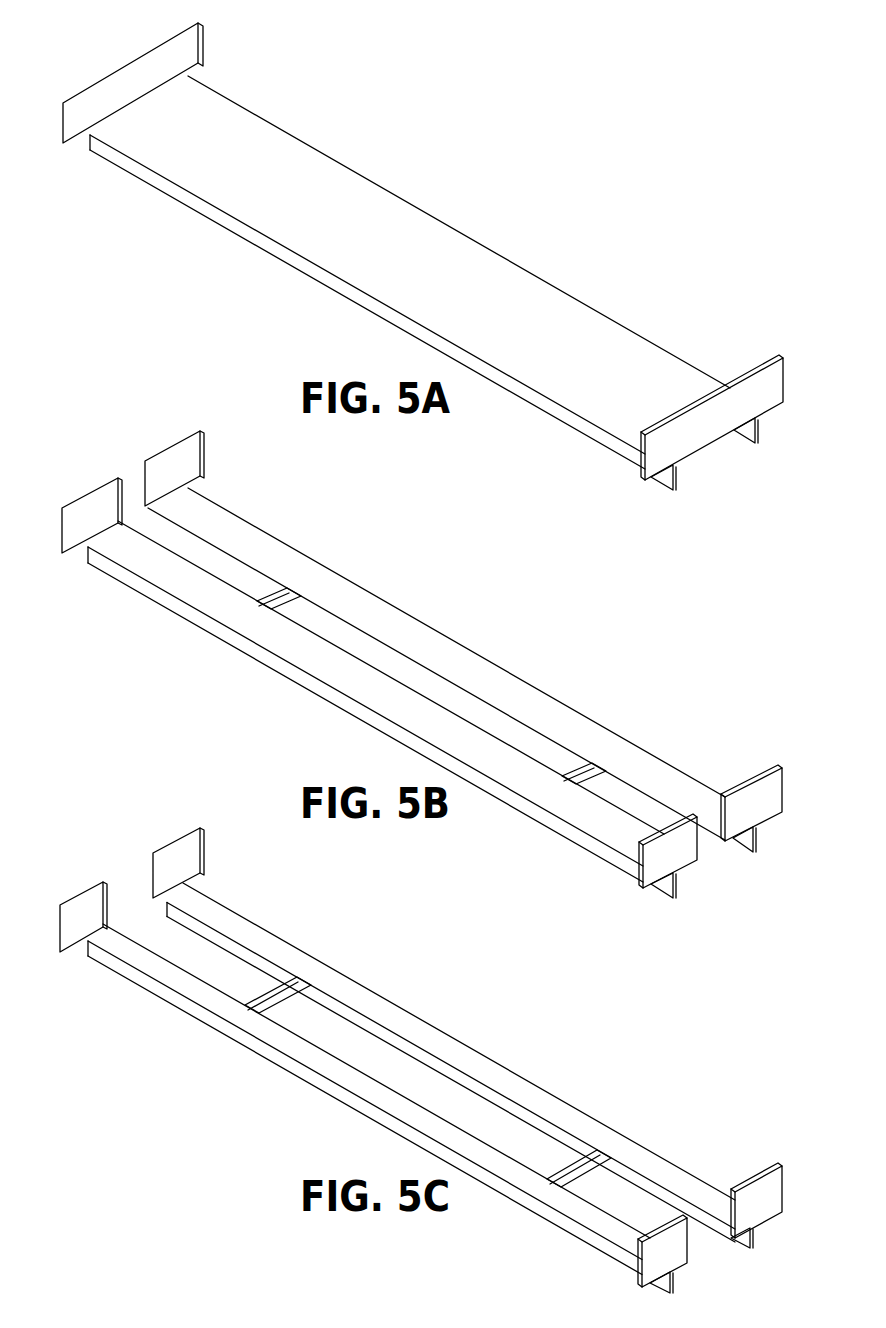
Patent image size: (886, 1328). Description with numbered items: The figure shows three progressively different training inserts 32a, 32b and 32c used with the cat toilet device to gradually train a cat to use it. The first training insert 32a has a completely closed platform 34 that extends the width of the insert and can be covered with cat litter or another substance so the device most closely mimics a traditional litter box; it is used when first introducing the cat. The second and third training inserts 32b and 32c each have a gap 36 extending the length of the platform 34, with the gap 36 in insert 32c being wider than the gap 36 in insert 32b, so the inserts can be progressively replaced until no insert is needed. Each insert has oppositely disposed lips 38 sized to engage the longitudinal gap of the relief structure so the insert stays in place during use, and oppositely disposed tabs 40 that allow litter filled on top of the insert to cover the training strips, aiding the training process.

In FIG. 5A, the training insert 32a is at (418, 285).
In FIG. 5B, the training insert 32b is at (433, 672).
In FIG. 5C, the training insert 32c is at (450, 1037).
In FIG. 5A, the platform 34 is at (480, 265).
In FIG. 5B, the platform 34 is at (408, 628).
In FIG. 5C, the platform 34 is at (508, 1077).
In FIG. 5B, the gap 36 is at (333, 630).
In FIG. 5C, the gap 36 is at (328, 1023).
In FIG. 5A, the lips 38 is at (675, 478).
In FIG. 5B, the lips 38 is at (678, 884).
In FIG. 5C, the lips 38 is at (676, 1285).
In FIG. 5A, the tabs 40 is at (122, 82).
In FIG. 5B, the tabs 40 is at (170, 460).
In FIG. 5C, the tabs 40 is at (166, 858).